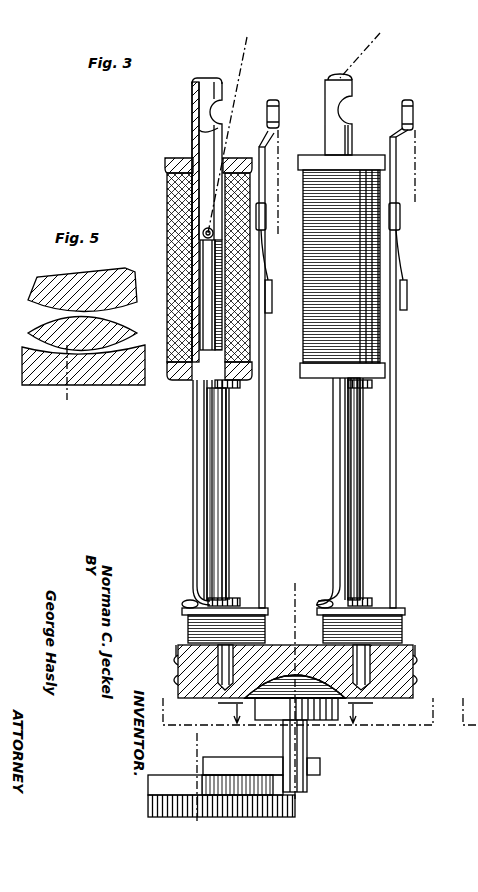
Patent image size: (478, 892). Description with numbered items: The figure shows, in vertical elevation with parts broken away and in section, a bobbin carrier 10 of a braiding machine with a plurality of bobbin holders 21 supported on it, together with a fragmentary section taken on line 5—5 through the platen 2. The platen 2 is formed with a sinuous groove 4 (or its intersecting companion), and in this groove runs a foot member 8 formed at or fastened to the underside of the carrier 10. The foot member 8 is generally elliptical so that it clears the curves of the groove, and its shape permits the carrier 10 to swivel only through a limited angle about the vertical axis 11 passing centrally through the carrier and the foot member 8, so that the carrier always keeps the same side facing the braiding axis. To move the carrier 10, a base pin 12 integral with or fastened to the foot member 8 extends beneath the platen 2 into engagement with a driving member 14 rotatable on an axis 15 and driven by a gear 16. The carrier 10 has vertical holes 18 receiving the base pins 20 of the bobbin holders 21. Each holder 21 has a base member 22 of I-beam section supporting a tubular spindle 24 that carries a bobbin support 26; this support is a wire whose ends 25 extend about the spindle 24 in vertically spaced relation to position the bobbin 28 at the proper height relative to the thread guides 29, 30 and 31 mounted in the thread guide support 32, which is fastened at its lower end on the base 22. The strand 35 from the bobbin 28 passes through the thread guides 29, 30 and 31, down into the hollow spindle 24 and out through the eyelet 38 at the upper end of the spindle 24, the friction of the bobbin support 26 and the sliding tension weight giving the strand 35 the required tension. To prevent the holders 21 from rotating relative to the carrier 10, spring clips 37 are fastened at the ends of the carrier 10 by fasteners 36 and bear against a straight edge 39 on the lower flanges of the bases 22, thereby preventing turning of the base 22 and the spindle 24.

In FIG. 3, the platen 2 is at (365, 725).
In FIG. 5, the platen 2 is at (35, 386).
In FIG. 5, the sinuous groove 4 is at (143, 337).
In FIG. 3, the section line 5- 5 is at (295, 713).
In FIG. 3, the foot member 8 is at (323, 700).
In FIG. 5, the foot member 8 is at (95, 383).
In FIG. 3, the bobbin carrier 10 is at (405, 708).
In FIG. 3, the vertical axis 11 is at (306, 684).
In FIG. 3, the base pin 12 is at (308, 790).
In FIG. 5, the base pin 12 is at (67, 379).
In FIG. 3, the driving member 14 is at (240, 757).
In FIG. 3, the axis 15 is at (197, 735).
In FIG. 3, the gear 16 is at (170, 797).
In FIG. 3, the holes 18 is at (314, 680).
In FIG. 3, the base pins 20 is at (182, 648).
In FIG. 3, the bobbin holder 21 is at (186, 483).
In FIG. 3, the base member 22 is at (267, 609).
In FIG. 3, the tubular spindle 24 is at (192, 437).
In FIG. 3, the ends of bobbin support 25 is at (188, 388).
In FIG. 3, the bobbin support 26 is at (203, 527).
In FIG. 3, the bobbin 28 is at (304, 316).
In FIG. 3, the thread guide 29 is at (266, 218).
In FIG. 3, the thread guide 30 is at (272, 250).
In FIG. 3, the thread guide 31 is at (279, 115).
In FIG. 3, the thread guide support 32 is at (266, 418).
In FIG. 3, the strand 35 is at (232, 148).
In FIG. 3, the fasteners 36 is at (175, 680).
In FIG. 3, the spring clips 37 is at (178, 660).
In FIG. 3, the eyelet 38 is at (205, 78).
In FIG. 3, the straight edge 39 is at (215, 617).